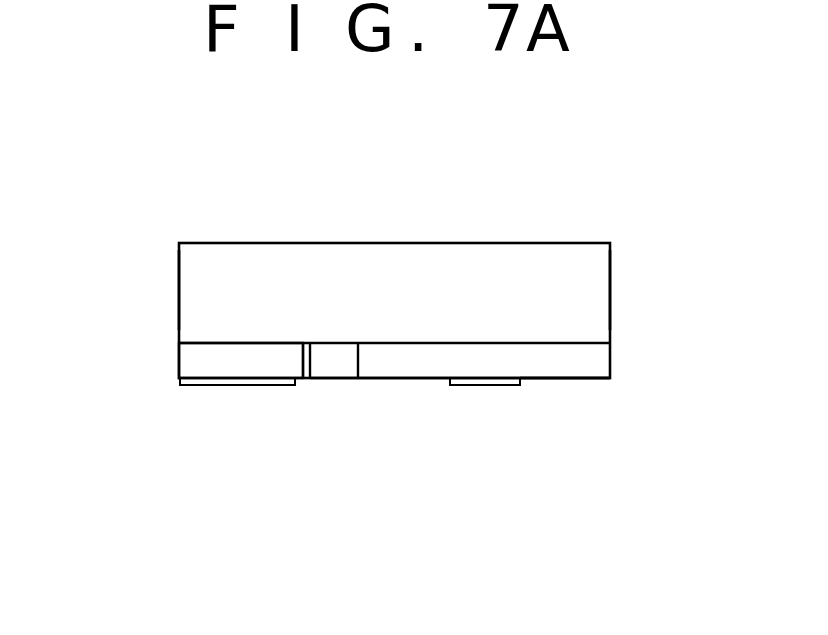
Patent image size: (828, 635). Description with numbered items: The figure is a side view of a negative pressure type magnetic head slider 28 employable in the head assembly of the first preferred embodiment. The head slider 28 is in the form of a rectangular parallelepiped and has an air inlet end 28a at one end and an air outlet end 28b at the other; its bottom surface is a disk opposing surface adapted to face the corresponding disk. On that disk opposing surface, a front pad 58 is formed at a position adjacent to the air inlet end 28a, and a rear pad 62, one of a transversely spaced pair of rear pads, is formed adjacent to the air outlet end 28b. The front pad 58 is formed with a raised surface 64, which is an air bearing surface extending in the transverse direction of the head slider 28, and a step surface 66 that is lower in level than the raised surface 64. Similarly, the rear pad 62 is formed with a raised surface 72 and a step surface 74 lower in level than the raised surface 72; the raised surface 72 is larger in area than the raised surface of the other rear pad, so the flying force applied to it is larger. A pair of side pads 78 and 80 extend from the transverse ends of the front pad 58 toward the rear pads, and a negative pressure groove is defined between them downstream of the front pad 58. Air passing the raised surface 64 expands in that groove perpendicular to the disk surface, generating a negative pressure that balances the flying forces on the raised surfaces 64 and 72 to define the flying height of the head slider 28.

The head slider 28 is at (503, 241).
The air inlet end 28a is at (611, 277).
The air outlet end 28b is at (178, 302).
The front pad 58 is at (611, 357).
The rear pad 62 is at (178, 368).
The raised surface 64 is at (483, 386).
The step surface 66 is at (562, 380).
The raised surface 72 is at (223, 388).
The step surface 74 is at (303, 385).
The side pad 78 is at (336, 380).
The side pad 80 is at (407, 380).